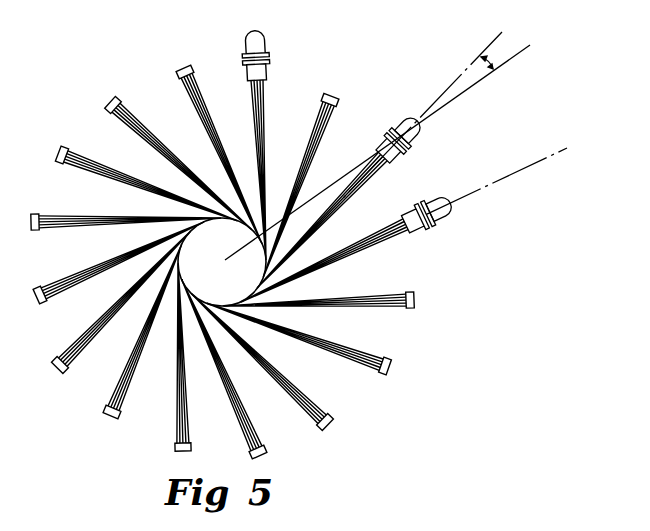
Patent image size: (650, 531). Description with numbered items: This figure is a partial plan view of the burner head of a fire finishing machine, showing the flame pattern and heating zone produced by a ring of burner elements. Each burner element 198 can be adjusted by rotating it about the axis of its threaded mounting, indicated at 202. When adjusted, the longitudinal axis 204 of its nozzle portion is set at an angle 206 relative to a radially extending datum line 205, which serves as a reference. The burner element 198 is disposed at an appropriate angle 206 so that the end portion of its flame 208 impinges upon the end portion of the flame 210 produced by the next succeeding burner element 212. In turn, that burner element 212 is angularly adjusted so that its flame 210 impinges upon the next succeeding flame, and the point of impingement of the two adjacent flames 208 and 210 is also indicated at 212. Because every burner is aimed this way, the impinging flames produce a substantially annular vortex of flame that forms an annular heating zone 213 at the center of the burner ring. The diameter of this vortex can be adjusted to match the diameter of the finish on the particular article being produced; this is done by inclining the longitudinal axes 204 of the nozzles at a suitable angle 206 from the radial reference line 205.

The burner element 198 is at (403, 146).
The threaded mounting axis 202 is at (414, 130).
The longitudinal axis of nozzle portion 204 is at (492, 40).
The radially extending datum line 205 is at (522, 47).
The angle 206 is at (497, 67).
The flame 208 is at (347, 197).
The flame 210 is at (370, 252).
The next succeeding burner element 212 is at (455, 215).
The annular heating zone 213 is at (181, 259).